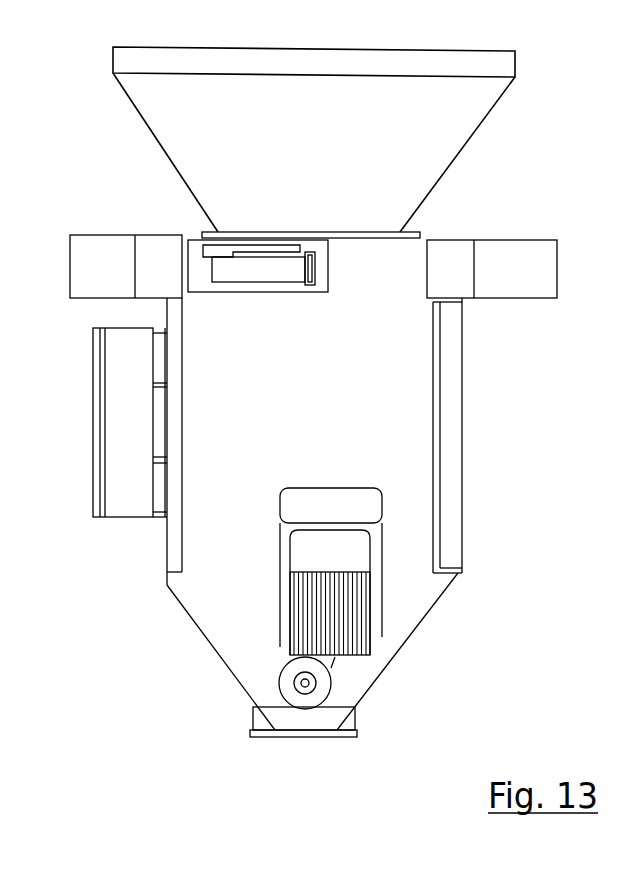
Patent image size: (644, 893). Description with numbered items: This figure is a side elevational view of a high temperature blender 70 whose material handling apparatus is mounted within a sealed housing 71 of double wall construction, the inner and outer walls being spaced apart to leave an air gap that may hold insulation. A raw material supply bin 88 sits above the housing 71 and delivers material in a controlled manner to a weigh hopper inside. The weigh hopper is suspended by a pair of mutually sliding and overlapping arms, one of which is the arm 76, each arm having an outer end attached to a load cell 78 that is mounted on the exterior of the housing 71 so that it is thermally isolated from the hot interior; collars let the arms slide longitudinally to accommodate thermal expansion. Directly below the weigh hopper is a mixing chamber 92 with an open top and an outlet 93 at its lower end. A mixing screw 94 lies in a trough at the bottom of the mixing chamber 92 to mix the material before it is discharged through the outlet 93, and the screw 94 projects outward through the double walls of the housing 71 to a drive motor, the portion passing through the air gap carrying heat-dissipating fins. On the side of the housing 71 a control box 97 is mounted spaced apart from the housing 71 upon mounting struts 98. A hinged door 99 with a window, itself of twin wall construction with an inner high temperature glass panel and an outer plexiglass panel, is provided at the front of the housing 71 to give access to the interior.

The high temperature blender 70 is at (572, 135).
The sealed housing 71 is at (147, 623).
The sliding arm 76 is at (315, 268).
The load cell 78 is at (250, 272).
The raw material supply bin 88 is at (430, 157).
The mixing chamber 92 is at (400, 643).
The outlet 93 is at (303, 727).
The mixing screw 94 is at (292, 675).
The control box 97 is at (128, 503).
The mounting struts 98 is at (167, 333).
The hinged door 99 is at (452, 397).